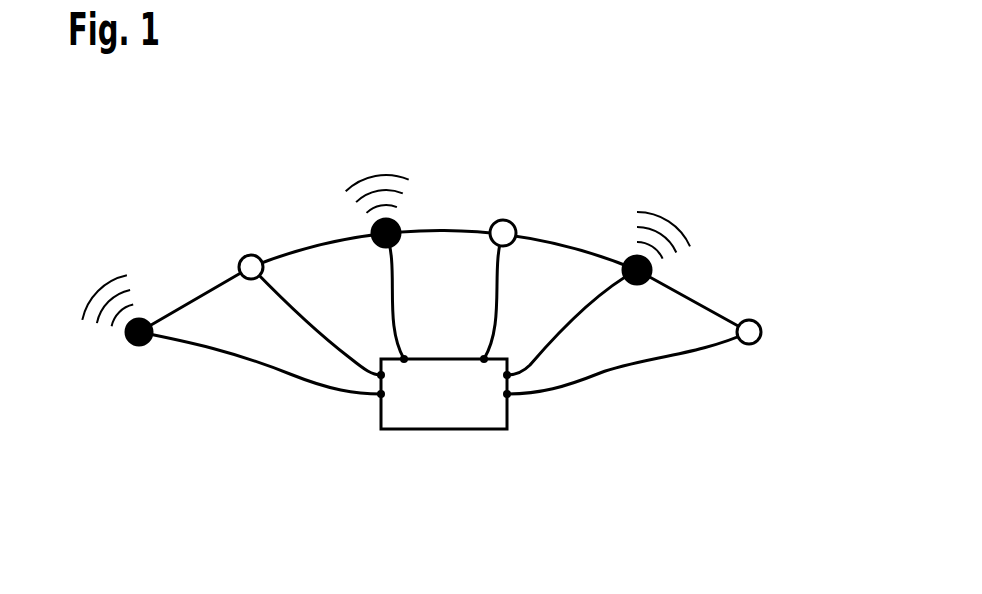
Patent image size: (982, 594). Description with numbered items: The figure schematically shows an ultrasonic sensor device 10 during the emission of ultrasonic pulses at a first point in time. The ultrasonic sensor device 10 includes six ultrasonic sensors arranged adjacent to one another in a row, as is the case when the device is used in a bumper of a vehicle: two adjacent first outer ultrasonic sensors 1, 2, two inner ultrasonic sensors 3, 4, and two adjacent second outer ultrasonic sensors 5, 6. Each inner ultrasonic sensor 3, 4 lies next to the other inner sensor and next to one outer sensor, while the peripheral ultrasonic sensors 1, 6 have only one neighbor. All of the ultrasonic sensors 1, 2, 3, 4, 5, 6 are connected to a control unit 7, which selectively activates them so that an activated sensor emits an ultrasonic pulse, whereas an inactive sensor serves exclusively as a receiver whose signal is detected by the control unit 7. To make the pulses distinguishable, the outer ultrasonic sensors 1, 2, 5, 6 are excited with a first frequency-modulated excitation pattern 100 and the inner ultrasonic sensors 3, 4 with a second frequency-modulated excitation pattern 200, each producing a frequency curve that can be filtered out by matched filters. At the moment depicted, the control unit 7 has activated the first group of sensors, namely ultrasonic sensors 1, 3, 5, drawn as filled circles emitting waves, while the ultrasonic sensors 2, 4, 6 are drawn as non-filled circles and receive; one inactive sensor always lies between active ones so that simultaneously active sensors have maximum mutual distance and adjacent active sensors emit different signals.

The ultrasonic sensor device 10 is at (155, 160).
The first outer ultrasonic sensor 1 is at (143, 357).
The first outer ultrasonic sensor 2 is at (227, 258).
The inner ultrasonic sensor 3 is at (355, 230).
The inner ultrasonic sensor 4 is at (525, 222).
The second outer ultrasonic sensor 5 is at (675, 267).
The second outer ultrasonic sensor 6 is at (747, 357).
The control unit 7 is at (444, 429).
The first frequency-modulated excitation pattern 100 is at (92, 272).
The second frequency-modulated excitation pattern 200 is at (381, 165).